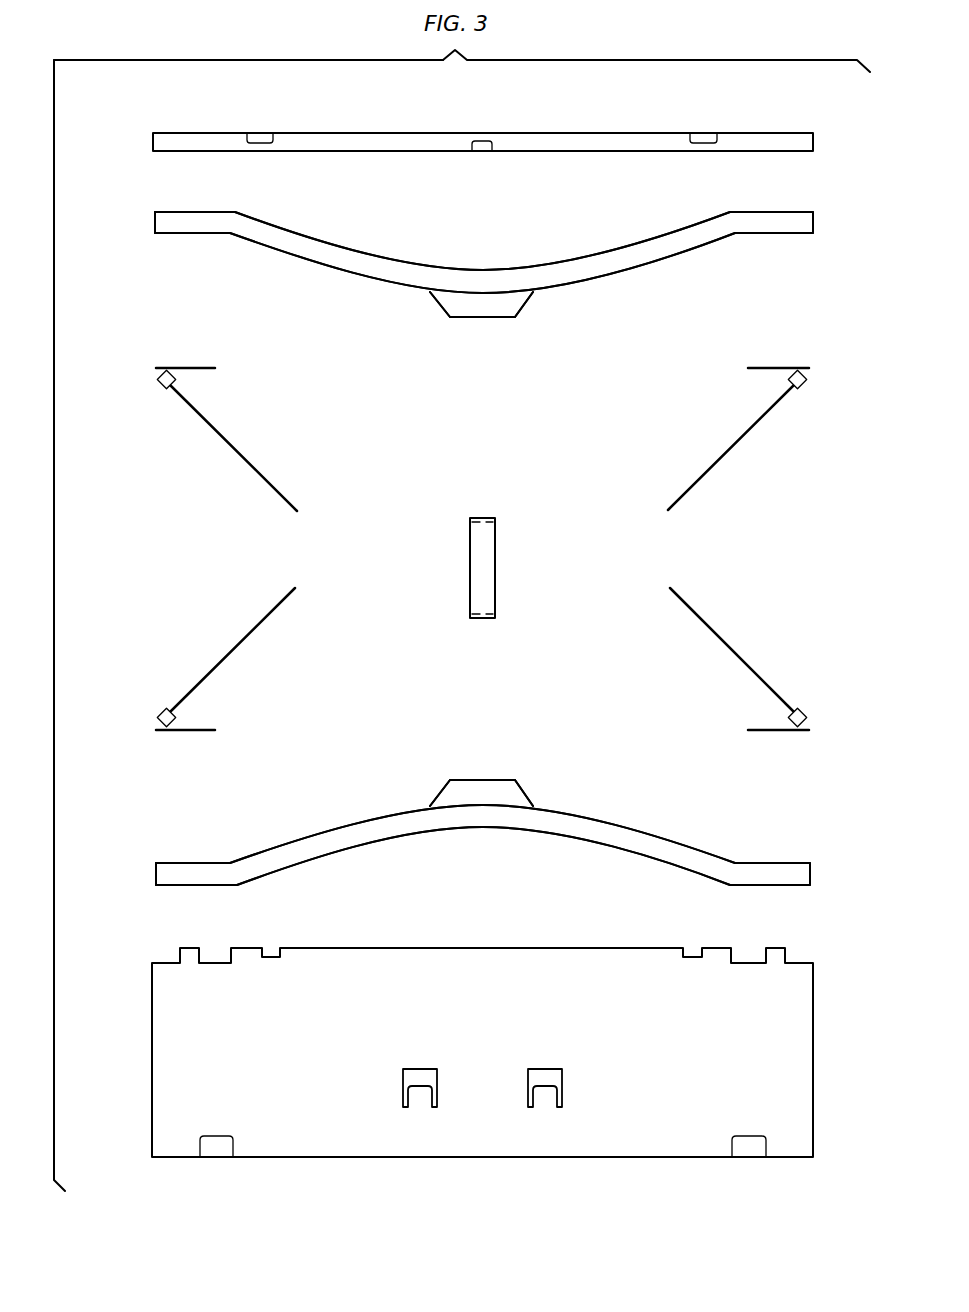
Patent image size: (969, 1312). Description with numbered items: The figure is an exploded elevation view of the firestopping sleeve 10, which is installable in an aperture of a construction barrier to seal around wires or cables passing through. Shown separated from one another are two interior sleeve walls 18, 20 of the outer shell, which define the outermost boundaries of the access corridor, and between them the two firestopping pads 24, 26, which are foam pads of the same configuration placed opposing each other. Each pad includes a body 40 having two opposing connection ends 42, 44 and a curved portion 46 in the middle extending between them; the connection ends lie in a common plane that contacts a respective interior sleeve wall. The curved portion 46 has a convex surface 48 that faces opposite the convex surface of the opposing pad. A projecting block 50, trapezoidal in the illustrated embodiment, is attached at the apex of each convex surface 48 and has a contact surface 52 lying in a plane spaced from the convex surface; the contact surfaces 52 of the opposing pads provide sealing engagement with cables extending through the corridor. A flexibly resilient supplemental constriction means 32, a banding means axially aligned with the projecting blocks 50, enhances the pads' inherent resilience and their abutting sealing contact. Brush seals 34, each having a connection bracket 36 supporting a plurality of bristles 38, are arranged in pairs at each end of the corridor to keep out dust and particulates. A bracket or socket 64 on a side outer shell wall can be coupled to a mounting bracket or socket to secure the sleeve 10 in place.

The firestopping sleeve 10 is at (134, 108).
The interior sleeve wall 18 is at (165, 152).
The interior sleeve wall 20 is at (162, 1047).
The firestopping pad 24 is at (826, 212).
The firestopping pad 26 is at (826, 782).
The supplemental constriction means 32 is at (481, 569).
The brush seal 34 is at (482, 548).
The connection bracket 36 is at (190, 368).
The bristles 38 is at (243, 455).
The body 40 is at (140, 213).
The connection end 42 is at (192, 228).
The connection end 44 is at (787, 222).
The curved portion 46 is at (365, 268).
The convex surface 48 is at (408, 290).
The projecting block 50 is at (512, 302).
The contact surface 52 is at (465, 318).
The bracket or socket 64 is at (437, 1098).